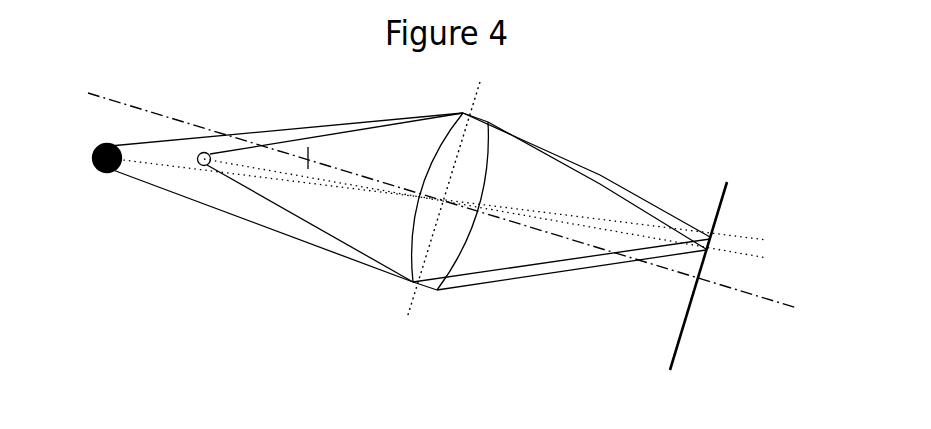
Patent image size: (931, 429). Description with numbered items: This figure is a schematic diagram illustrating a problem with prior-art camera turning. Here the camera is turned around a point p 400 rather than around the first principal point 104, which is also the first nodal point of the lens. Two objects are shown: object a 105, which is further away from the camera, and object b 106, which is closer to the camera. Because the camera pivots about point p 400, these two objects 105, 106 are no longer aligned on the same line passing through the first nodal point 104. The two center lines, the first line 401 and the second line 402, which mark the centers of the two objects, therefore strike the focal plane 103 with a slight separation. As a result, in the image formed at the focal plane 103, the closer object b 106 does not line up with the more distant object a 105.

The focal plane 103 is at (687, 293).
The first principal point 104 is at (482, 191).
The object a 105 is at (98, 173).
The object b 106 is at (203, 166).
The point p 400 is at (310, 158).
The line C1 401 is at (471, 205).
The line C2 402 is at (520, 220).